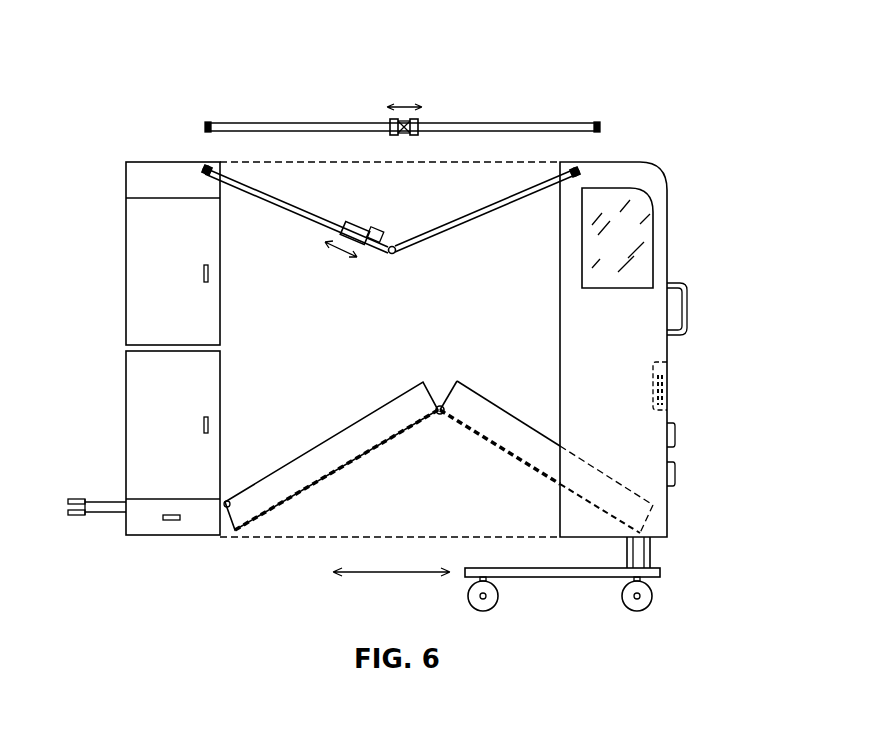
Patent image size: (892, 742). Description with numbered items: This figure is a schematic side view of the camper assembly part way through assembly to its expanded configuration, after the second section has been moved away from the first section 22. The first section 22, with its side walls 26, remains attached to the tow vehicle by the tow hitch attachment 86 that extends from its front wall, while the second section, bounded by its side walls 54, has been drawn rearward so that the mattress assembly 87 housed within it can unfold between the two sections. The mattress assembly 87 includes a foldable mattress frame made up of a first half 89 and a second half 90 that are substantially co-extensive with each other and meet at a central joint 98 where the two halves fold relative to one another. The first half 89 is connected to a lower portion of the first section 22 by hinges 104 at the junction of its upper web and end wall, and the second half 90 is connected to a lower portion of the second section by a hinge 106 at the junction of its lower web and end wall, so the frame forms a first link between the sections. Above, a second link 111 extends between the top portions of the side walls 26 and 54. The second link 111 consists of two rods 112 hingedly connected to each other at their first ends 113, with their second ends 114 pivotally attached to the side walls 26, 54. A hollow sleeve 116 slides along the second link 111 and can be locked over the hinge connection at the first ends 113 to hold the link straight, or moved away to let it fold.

The first section 22 is at (126, 152).
The side walls 26 is at (130, 176).
The side walls 54 is at (655, 195).
The tow hitch attachment 86 is at (78, 498).
The mattress assembly 87 is at (410, 470).
The first half 89 is at (277, 513).
The second half 90 is at (507, 453).
The hinge 98 is at (440, 414).
The hinges 104 is at (225, 500).
The hinge 106 is at (640, 533).
The second link 111 is at (453, 80).
The rods 112 is at (250, 123).
The first ends 113 is at (391, 253).
The second ends 114 is at (205, 168).
The hollow sleeve 116 is at (390, 120).